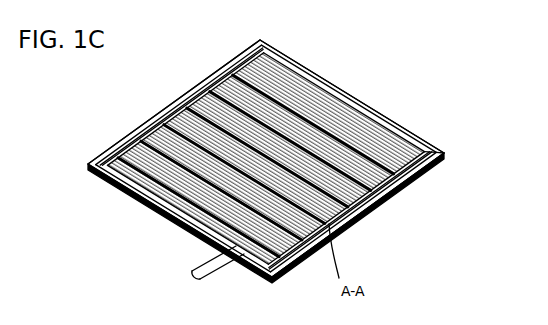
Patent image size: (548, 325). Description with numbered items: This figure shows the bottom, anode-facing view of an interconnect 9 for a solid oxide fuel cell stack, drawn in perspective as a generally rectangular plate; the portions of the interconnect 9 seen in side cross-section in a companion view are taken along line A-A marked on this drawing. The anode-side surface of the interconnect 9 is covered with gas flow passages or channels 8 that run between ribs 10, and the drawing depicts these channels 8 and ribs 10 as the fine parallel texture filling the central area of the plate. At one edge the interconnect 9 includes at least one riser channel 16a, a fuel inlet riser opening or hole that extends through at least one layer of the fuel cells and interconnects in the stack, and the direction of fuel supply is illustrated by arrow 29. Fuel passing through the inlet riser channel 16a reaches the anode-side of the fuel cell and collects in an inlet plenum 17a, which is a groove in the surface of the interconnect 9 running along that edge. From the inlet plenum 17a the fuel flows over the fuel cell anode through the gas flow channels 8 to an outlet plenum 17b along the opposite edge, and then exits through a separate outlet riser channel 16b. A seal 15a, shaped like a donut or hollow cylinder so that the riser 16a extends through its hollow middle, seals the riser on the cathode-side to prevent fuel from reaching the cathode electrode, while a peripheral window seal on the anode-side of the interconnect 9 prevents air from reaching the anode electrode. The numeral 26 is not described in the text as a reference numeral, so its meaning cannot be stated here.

The interconnect 9 is at (265, 160).
The ribs 10 is at (163, 221).
The seal 15a is at (343, 96).
The riser channel 16a is at (183, 114).
The outlet riser channel 16b is at (364, 212).
The inlet plenum 17a is at (221, 78).
The outlet plenum 17b is at (377, 185).
The corner piece 26 is at (421, 147).
The arrow 29 is at (88, 163).
The gas flow passages or channels 8 is at (213, 272).